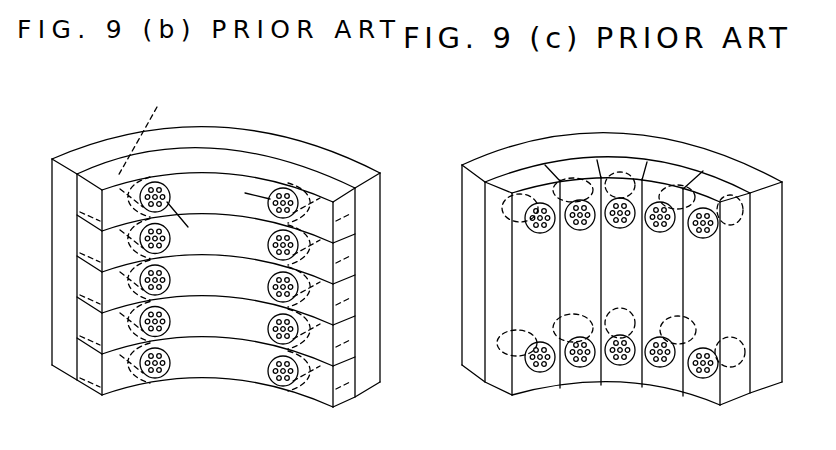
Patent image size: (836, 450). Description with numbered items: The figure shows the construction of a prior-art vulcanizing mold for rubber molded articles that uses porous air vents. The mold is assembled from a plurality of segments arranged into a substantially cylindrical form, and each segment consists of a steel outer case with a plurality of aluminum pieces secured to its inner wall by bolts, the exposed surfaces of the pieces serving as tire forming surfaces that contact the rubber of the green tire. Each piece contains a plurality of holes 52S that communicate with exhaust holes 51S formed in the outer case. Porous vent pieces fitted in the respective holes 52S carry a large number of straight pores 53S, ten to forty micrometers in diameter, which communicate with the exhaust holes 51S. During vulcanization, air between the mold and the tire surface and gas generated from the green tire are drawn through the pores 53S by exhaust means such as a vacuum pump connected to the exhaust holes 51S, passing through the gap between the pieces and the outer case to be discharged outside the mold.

The exhaust hole 51S is at (371, 206).
The hole 52S is at (216, 235).
The pore 53S is at (218, 217).